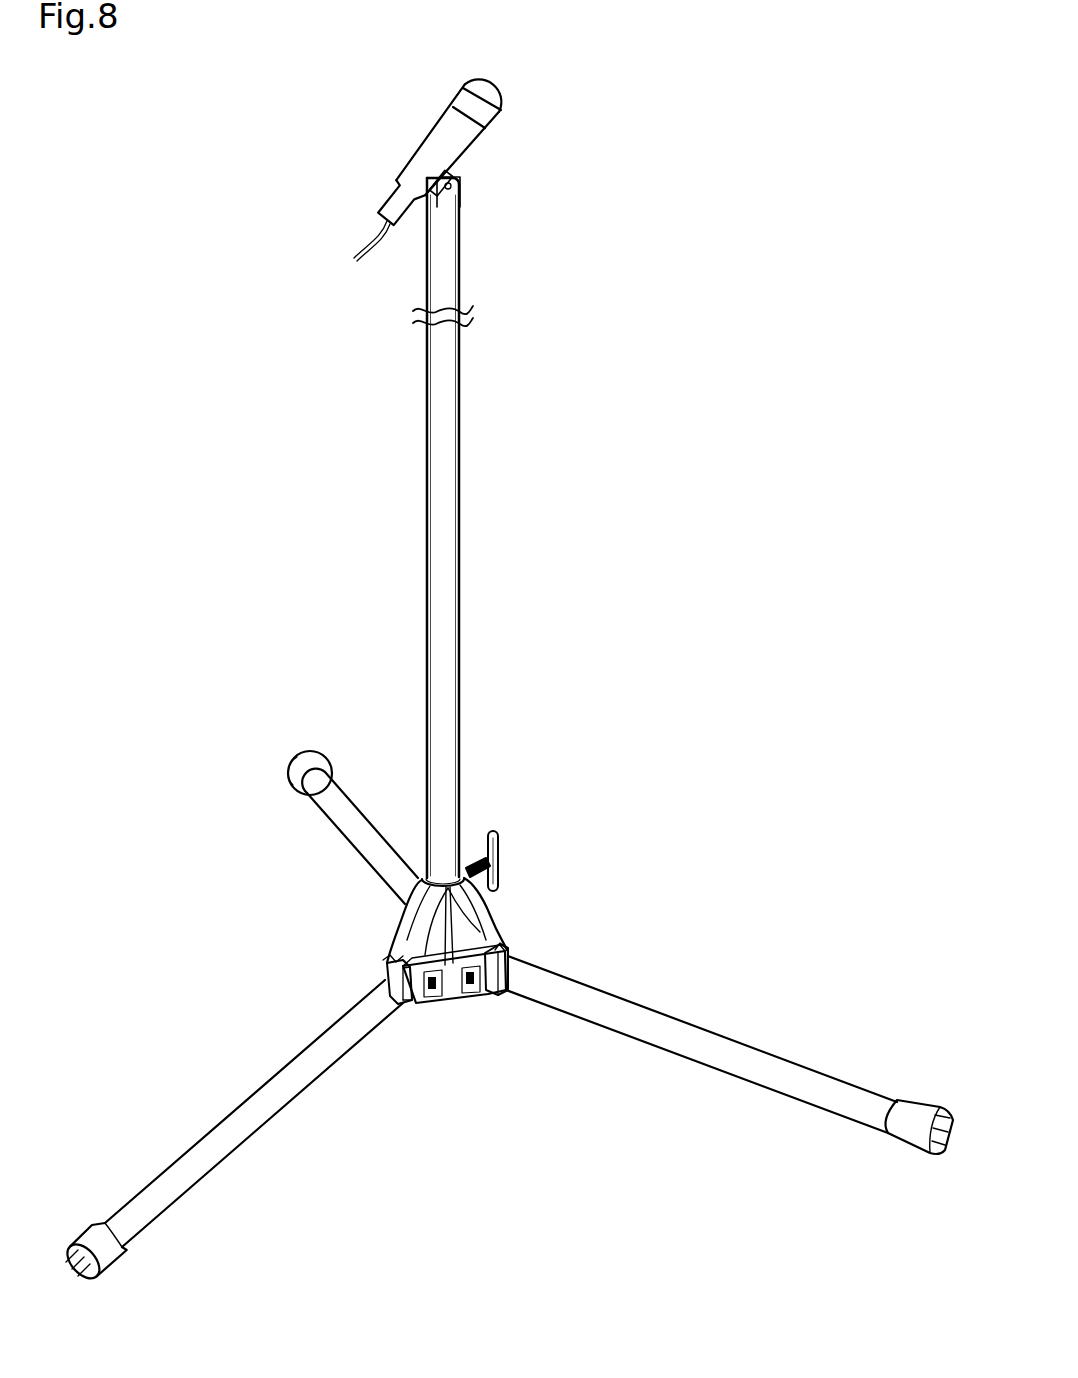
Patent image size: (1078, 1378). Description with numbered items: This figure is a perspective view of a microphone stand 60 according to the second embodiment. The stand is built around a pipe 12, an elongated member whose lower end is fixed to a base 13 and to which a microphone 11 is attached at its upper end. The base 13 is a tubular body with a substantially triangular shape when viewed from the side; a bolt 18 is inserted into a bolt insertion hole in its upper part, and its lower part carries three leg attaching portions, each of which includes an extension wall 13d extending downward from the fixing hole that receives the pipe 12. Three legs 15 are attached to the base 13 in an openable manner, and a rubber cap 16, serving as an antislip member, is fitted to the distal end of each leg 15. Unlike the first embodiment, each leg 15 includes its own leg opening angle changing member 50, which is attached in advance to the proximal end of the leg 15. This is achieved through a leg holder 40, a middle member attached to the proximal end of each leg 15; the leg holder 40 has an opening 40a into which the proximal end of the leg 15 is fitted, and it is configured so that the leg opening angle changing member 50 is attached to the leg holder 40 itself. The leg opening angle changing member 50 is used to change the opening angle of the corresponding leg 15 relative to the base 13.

The microphone 11 is at (506, 108).
The microphone stand 60 is at (534, 250).
The pipe 12 is at (432, 401).
The bolt 18 is at (500, 835).
The base 13 is at (388, 930).
The extension wall 13d is at (480, 914).
The leg opening angle changing member 50 is at (380, 958).
The leg holder 40 is at (412, 1008).
The opening 40a is at (407, 1000).
The leg 15 is at (352, 810).
The rubber cap 16 is at (307, 748).